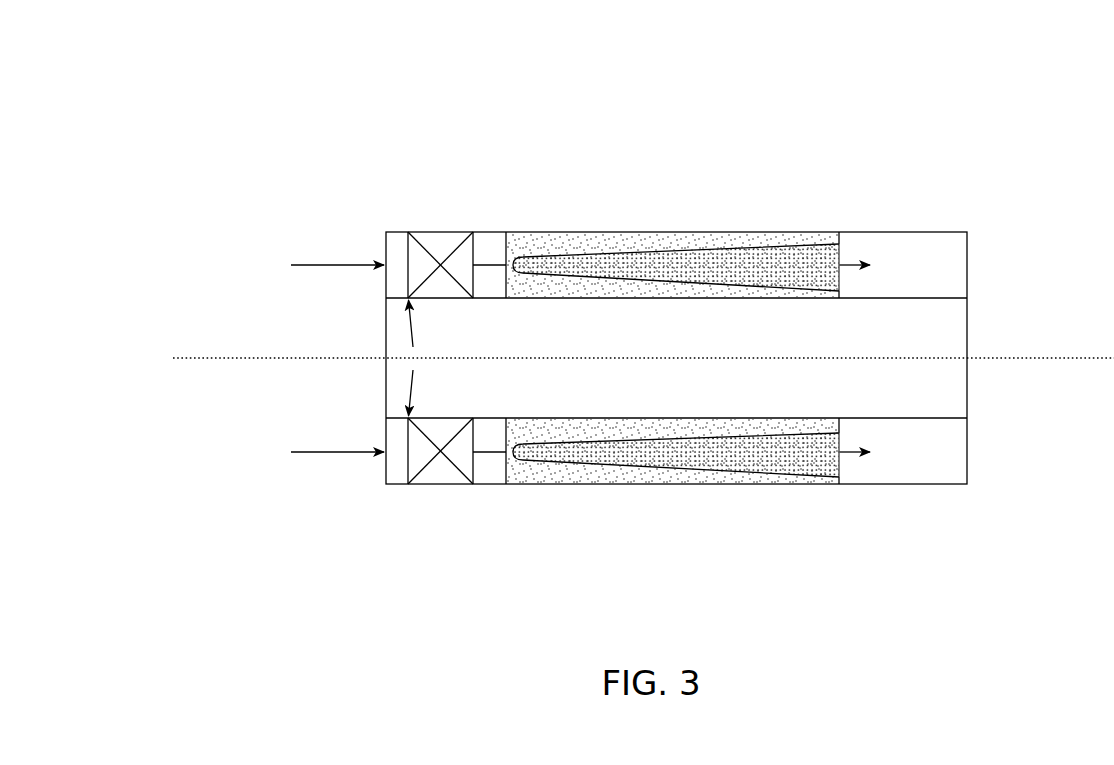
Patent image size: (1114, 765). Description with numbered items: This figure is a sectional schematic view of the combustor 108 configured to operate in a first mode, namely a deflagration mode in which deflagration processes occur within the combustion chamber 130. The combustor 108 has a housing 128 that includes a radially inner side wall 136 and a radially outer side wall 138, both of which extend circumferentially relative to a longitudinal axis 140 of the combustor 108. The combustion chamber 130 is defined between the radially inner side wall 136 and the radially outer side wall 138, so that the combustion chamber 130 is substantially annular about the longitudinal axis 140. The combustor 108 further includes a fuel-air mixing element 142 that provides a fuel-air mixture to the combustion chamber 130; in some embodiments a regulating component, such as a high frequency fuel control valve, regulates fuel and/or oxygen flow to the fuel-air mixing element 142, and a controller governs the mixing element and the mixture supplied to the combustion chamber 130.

The combustor 108 is at (950, 88).
The housing 128 is at (385, 243).
The fuel-air mixing element 142 is at (440, 240).
The radially outer side wall 138 is at (762, 233).
The radially inner side wall 136 is at (606, 298).
The combustion chamber 130 is at (612, 475).
The longitudinal axis 140 is at (1085, 358).